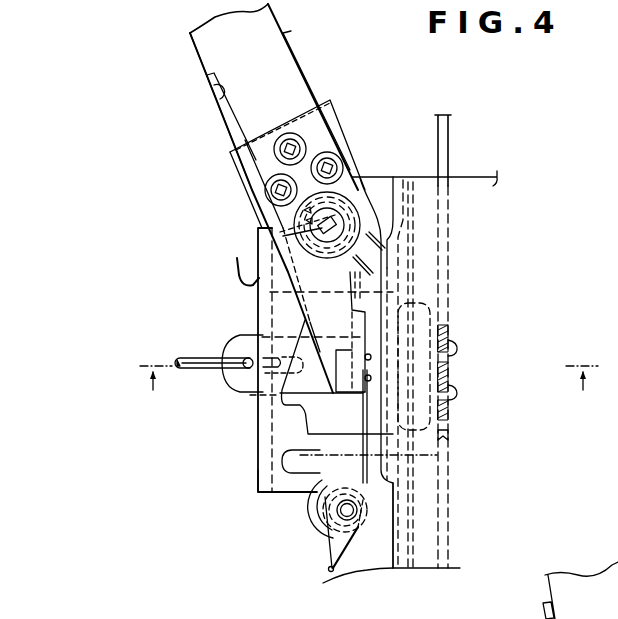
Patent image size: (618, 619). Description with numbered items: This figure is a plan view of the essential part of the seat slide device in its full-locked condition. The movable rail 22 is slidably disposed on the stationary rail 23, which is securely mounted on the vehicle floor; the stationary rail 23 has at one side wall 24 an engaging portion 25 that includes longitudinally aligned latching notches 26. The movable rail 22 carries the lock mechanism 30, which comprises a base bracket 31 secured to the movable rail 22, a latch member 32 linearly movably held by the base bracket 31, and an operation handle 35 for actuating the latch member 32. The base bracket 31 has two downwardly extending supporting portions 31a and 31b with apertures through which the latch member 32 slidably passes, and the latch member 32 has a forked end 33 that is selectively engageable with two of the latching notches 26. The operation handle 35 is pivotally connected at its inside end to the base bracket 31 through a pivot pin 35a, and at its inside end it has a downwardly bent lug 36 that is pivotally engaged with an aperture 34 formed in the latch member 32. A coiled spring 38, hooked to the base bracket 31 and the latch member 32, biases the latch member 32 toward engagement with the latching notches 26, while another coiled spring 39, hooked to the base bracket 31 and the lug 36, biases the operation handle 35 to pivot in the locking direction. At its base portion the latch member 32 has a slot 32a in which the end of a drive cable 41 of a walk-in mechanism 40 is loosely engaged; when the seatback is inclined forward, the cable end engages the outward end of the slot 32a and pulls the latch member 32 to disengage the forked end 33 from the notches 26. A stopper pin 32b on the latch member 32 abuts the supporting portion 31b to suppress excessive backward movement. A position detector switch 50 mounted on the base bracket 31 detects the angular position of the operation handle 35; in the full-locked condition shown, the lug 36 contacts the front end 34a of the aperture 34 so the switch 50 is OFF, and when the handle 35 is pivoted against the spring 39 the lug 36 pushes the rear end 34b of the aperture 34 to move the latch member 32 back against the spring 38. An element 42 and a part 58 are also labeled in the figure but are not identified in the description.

The movable rail 22 is at (414, 537).
The stationary rail 23 is at (449, 150).
The side wall 24 is at (442, 256).
The engaging portion 25 is at (452, 438).
The latching notches 26 is at (452, 326).
The lock mechanism 30 is at (350, 130).
The base bracket 31 is at (281, 495).
The supporting portion 31a is at (390, 267).
The supporting portion 31b is at (258, 474).
The latch member 32 is at (226, 389).
The slot 32a is at (262, 348).
The stopper pin 32b is at (335, 385).
The forked end 33 is at (460, 348).
The aperture 34 is at (360, 349).
The front end of aperture 34a is at (373, 361).
The rear end of aperture 34b is at (303, 437).
The operation handle 35 is at (303, 62).
The pivot pin 35a is at (296, 246).
The downwardly bent lug 36 is at (370, 367).
The coiled spring 38 is at (319, 532).
The coiled spring 39 is at (275, 252).
The walk-in mechanism 40 is at (190, 356).
The drive cable 41 is at (203, 370).
The pin hole 42 is at (248, 370).
The position detector switch 50 is at (365, 215).
The cross bar 58 is at (390, 262).